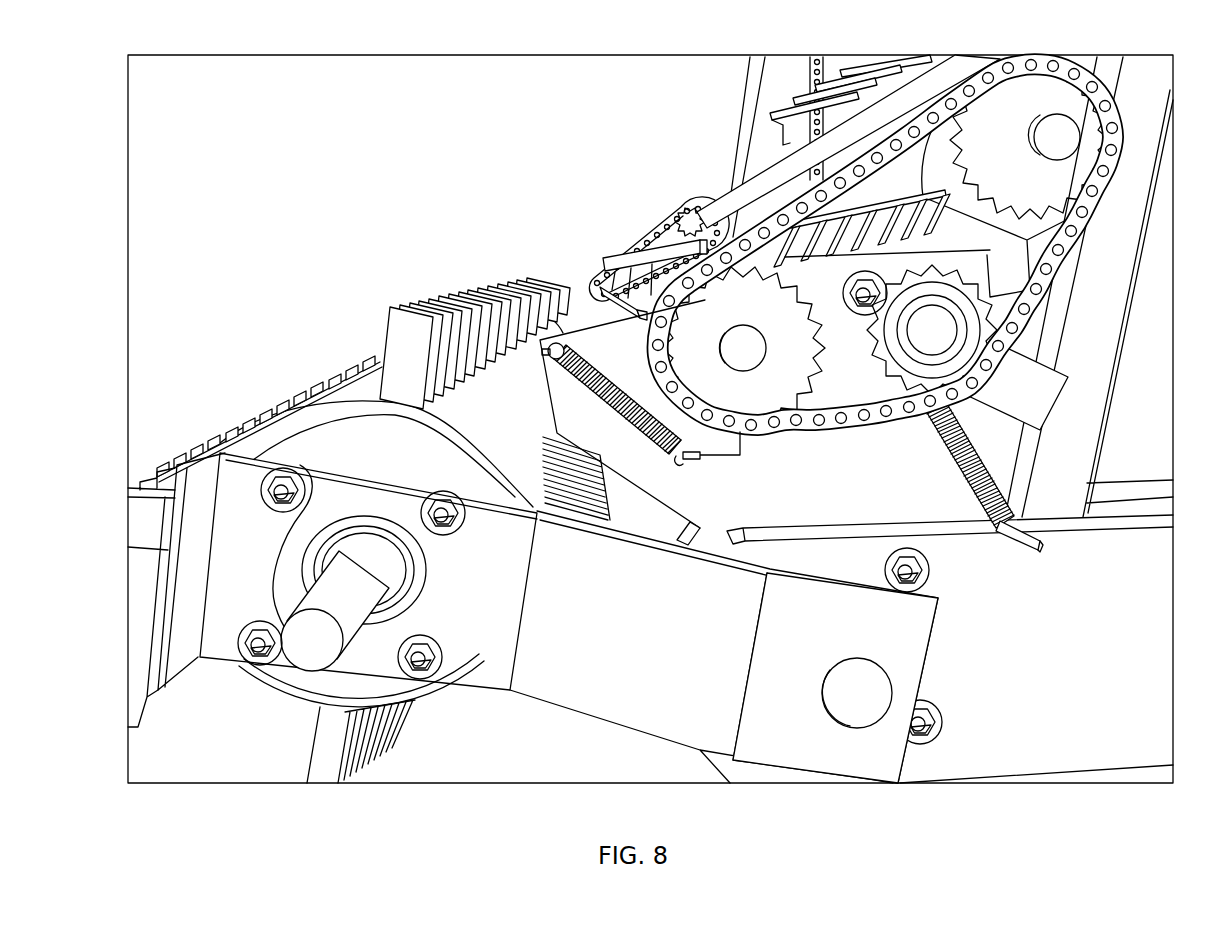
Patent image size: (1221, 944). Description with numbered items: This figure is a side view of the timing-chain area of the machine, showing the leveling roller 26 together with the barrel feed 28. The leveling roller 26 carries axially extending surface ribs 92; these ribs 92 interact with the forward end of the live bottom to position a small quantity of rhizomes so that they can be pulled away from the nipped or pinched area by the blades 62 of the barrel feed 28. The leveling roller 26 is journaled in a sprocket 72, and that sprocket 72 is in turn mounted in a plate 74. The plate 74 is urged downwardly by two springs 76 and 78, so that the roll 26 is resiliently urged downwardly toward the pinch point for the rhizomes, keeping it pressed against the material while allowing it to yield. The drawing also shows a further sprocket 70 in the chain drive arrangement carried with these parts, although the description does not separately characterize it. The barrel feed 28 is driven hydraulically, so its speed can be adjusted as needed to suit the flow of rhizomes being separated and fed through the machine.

The leveling roller 26 is at (697, 273).
The barrel feed 28 is at (505, 432).
The blades 62 is at (392, 335).
The drive sprocket 70 is at (1062, 178).
The sprocket 72 is at (760, 390).
The plate 74 is at (663, 385).
The spring 76 is at (633, 380).
The spring 78 is at (968, 481).
The surface ribs 92 is at (630, 270).